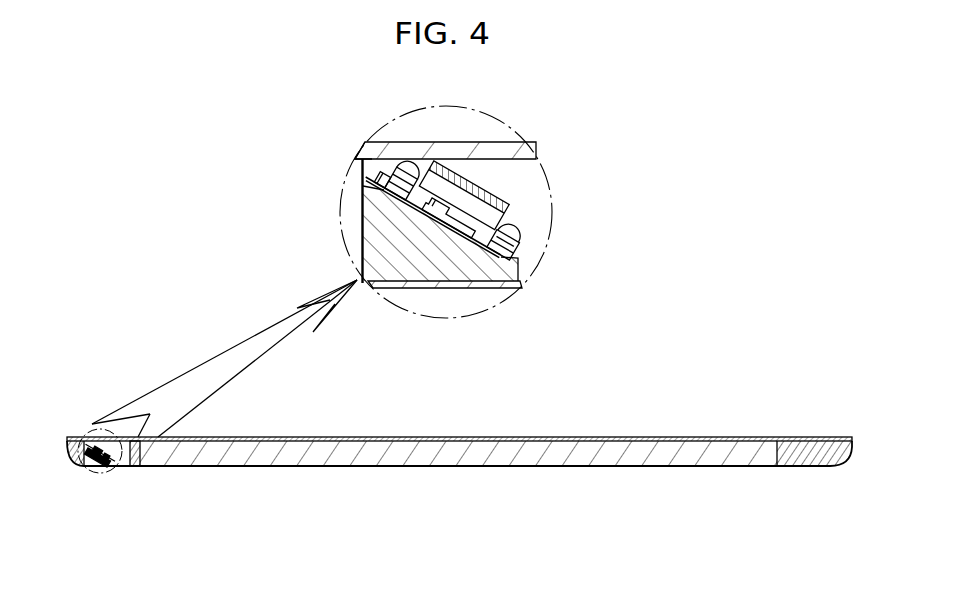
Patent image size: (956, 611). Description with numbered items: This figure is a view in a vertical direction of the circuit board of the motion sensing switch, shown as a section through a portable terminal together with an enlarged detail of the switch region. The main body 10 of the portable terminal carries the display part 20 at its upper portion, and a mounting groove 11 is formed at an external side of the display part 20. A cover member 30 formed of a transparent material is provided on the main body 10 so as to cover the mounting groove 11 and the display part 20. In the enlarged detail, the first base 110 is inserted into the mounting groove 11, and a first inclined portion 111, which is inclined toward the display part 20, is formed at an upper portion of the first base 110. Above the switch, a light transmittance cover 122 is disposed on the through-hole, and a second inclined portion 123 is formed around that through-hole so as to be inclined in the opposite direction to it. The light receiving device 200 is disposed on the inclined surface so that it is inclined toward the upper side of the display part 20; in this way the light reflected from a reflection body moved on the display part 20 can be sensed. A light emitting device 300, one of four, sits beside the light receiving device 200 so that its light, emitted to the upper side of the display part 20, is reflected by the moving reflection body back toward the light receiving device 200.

The main body 10 is at (72, 457).
The mounting groove 11 is at (523, 207).
The display part 20 is at (537, 457).
The cover member 30 is at (448, 438).
The first base 110 is at (378, 235).
The first inclined portion 111 is at (360, 187).
The light transmittance cover 122 is at (482, 158).
The second inclined portion 123 is at (358, 153).
The light receiving device 200 is at (487, 203).
The light emitting device 300 is at (407, 177).